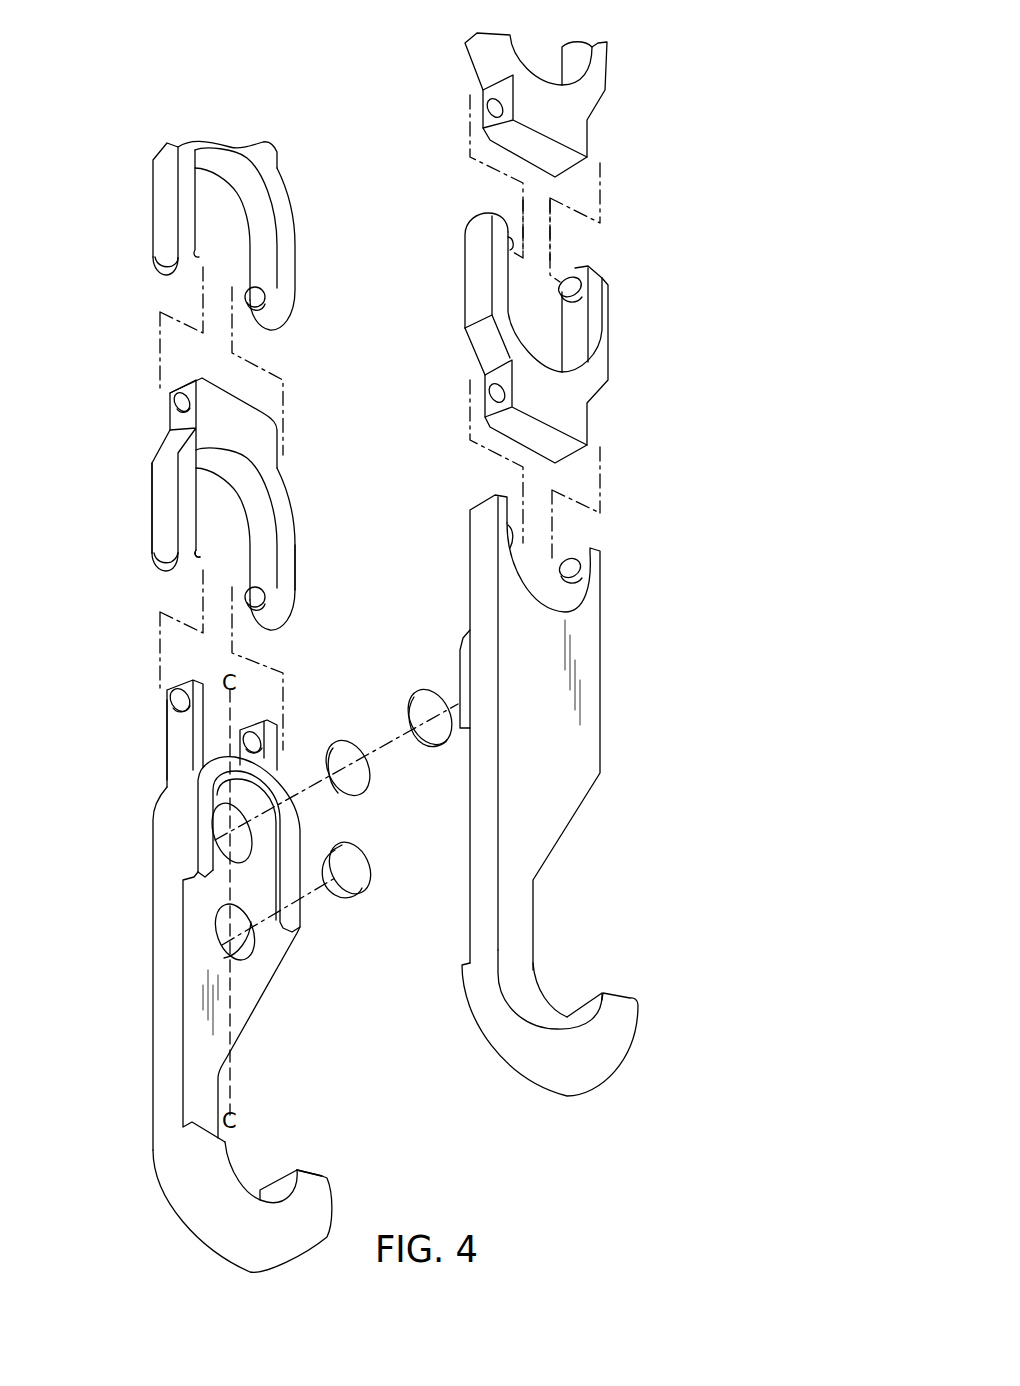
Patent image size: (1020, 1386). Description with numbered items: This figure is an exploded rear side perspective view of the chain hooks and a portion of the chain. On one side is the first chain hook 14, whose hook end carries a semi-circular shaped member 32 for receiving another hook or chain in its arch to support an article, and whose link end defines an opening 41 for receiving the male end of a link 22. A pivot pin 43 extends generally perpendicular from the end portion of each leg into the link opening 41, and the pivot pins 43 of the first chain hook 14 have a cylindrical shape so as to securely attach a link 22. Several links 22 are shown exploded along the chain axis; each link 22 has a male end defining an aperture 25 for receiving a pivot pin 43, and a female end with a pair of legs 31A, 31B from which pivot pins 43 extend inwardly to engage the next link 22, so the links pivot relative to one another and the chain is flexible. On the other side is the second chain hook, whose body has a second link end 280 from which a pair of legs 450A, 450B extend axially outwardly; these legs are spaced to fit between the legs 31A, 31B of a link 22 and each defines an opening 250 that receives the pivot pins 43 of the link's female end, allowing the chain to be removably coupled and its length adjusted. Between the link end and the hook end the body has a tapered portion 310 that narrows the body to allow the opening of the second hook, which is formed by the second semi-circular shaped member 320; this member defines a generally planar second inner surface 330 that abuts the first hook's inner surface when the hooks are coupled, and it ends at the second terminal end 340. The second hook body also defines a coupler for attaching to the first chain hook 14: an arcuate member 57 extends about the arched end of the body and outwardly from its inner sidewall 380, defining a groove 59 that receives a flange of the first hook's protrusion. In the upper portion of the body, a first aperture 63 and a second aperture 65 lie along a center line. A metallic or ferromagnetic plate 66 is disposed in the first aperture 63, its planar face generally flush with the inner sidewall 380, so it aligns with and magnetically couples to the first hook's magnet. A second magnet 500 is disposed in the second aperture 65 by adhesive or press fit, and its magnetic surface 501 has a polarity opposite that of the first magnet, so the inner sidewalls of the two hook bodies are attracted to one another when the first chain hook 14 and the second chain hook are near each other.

The first chain hook 14 is at (590, 705).
The link 22 is at (153, 206).
The aperture 25 is at (175, 405).
The leg 31A is at (152, 510).
The leg 31B is at (285, 590).
The semi-circular shaped member 32 is at (605, 1050).
The opening 41 is at (222, 542).
The pivot pin 43 is at (258, 292).
The arcuate member 57 is at (200, 848).
The groove 59 is at (195, 882).
The first aperture 63 is at (262, 822).
The second aperture 65 is at (215, 930).
The metallic or ferromagnetic plate 66 is at (365, 783).
The opening 250 is at (175, 700).
The second link end 280 is at (170, 735).
The tapered portion 310 is at (240, 962).
The second semi-circular shaped member 320 is at (208, 1228).
The second inner surface 330 is at (317, 1188).
The second terminal end 340 is at (296, 1172).
The inner sidewall 380 is at (215, 1003).
The leg 450A is at (170, 750).
The leg 450B is at (280, 748).
The second magnet 500 is at (362, 880).
The magnetic surface 501 is at (352, 868).